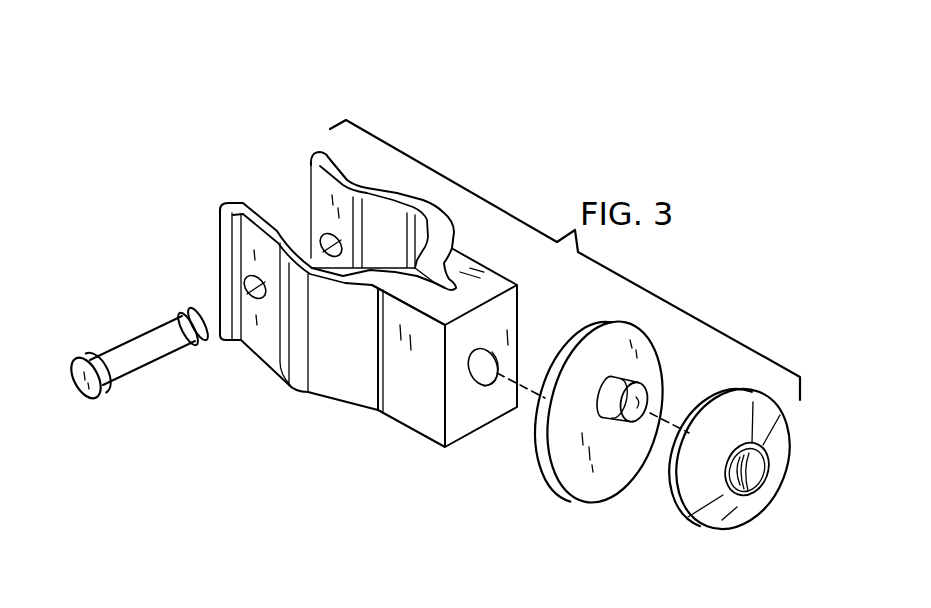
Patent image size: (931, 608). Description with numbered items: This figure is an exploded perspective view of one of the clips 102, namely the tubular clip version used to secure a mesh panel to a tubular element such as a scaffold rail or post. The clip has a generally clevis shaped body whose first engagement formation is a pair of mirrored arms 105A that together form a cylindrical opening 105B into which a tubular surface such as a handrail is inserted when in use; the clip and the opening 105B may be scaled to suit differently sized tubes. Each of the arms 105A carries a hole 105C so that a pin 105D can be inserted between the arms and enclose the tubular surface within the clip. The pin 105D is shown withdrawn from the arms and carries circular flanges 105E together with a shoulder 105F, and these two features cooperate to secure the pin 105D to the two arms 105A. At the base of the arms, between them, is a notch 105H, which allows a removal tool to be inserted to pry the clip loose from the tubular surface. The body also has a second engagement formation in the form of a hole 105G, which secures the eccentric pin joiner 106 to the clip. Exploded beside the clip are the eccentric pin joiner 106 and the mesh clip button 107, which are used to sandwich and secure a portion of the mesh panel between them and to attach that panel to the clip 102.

The clip 102 is at (146, 68).
The arms 105A is at (350, 175).
The opening 105B is at (391, 122).
The hole 105C is at (320, 237).
The pin 105D is at (147, 340).
The circular flanges 105E is at (200, 358).
The shoulder 105F is at (72, 348).
The hole 105G is at (489, 382).
The notch 105H is at (430, 270).
The eccentric pin joiner 106 is at (588, 475).
The mesh clip button 107 is at (722, 518).